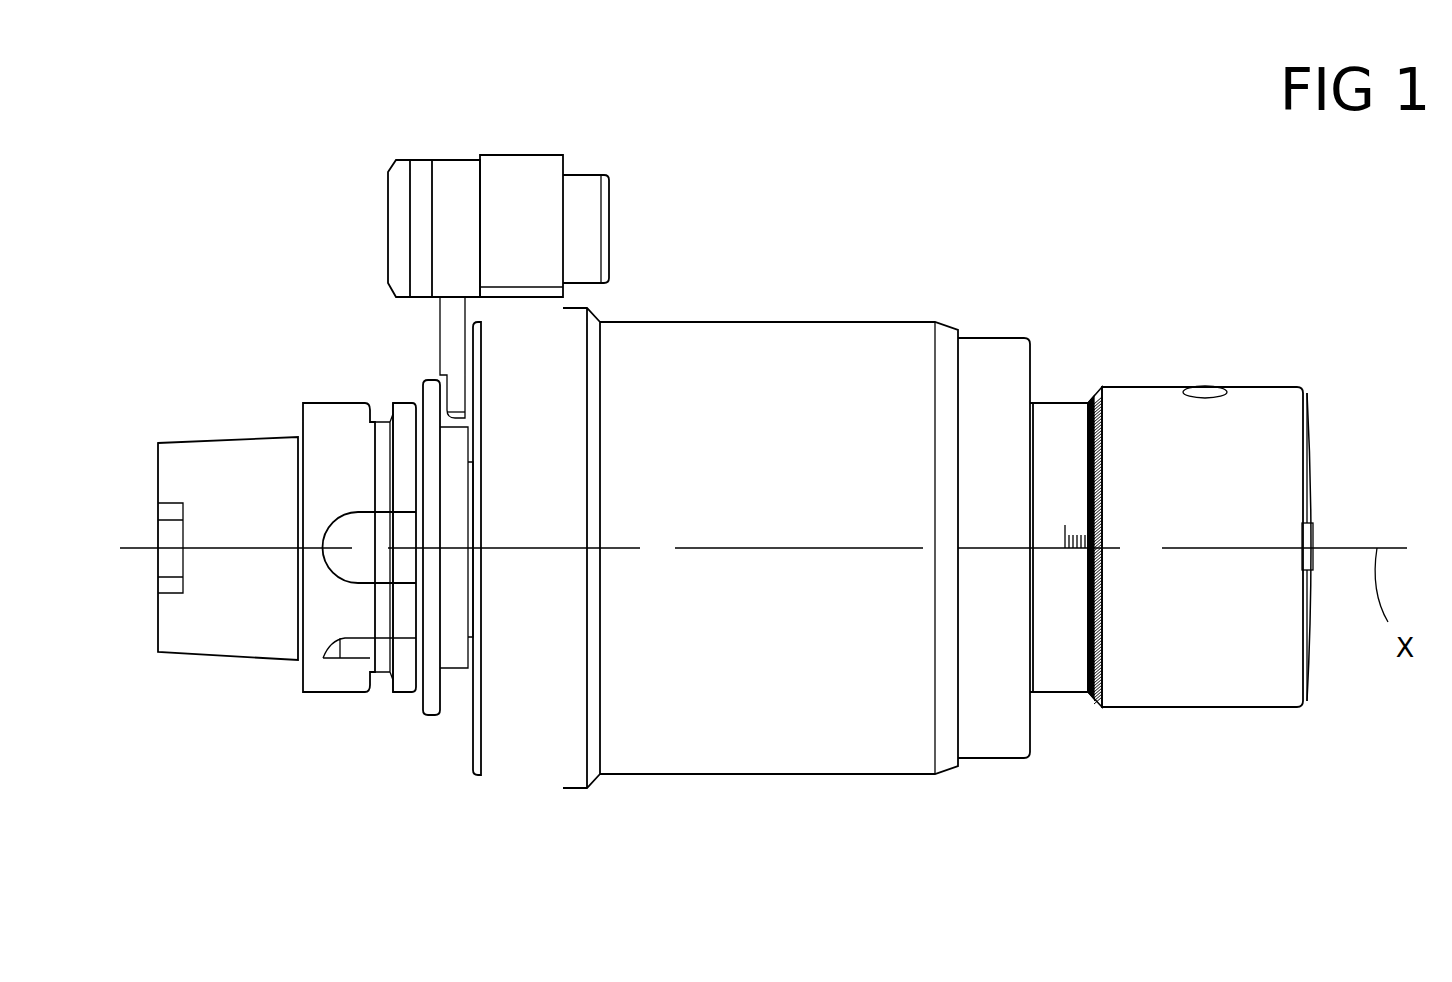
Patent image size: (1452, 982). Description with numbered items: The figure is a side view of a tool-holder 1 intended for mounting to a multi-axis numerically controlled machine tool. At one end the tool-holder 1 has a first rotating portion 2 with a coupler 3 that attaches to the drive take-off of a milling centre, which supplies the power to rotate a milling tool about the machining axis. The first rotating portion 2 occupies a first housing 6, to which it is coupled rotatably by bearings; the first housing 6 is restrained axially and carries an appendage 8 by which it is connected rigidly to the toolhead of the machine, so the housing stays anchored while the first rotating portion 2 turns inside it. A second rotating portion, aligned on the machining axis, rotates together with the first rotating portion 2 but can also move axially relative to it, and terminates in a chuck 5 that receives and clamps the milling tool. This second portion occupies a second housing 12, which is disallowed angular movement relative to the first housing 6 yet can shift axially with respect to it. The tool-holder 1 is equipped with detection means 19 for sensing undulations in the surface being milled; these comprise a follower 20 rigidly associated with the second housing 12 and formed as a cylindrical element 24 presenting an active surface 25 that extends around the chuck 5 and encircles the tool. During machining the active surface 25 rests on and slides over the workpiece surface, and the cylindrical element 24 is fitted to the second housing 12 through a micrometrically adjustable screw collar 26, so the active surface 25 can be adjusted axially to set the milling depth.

The tool-holder 1 is at (842, 230).
The first rotating portion 2 is at (392, 695).
The coupler 3 is at (155, 592).
The chuck 5 is at (1071, 521).
The first housing 6 is at (806, 322).
The appendage 8 is at (588, 173).
The second housing 12 is at (1055, 403).
The detection means 19 is at (1322, 420).
The follower 20 is at (1312, 685).
The cylindrical element 24 is at (1172, 680).
The active surface 25 is at (1313, 483).
The micrometrically adjustable screw collar 26 is at (1093, 702).